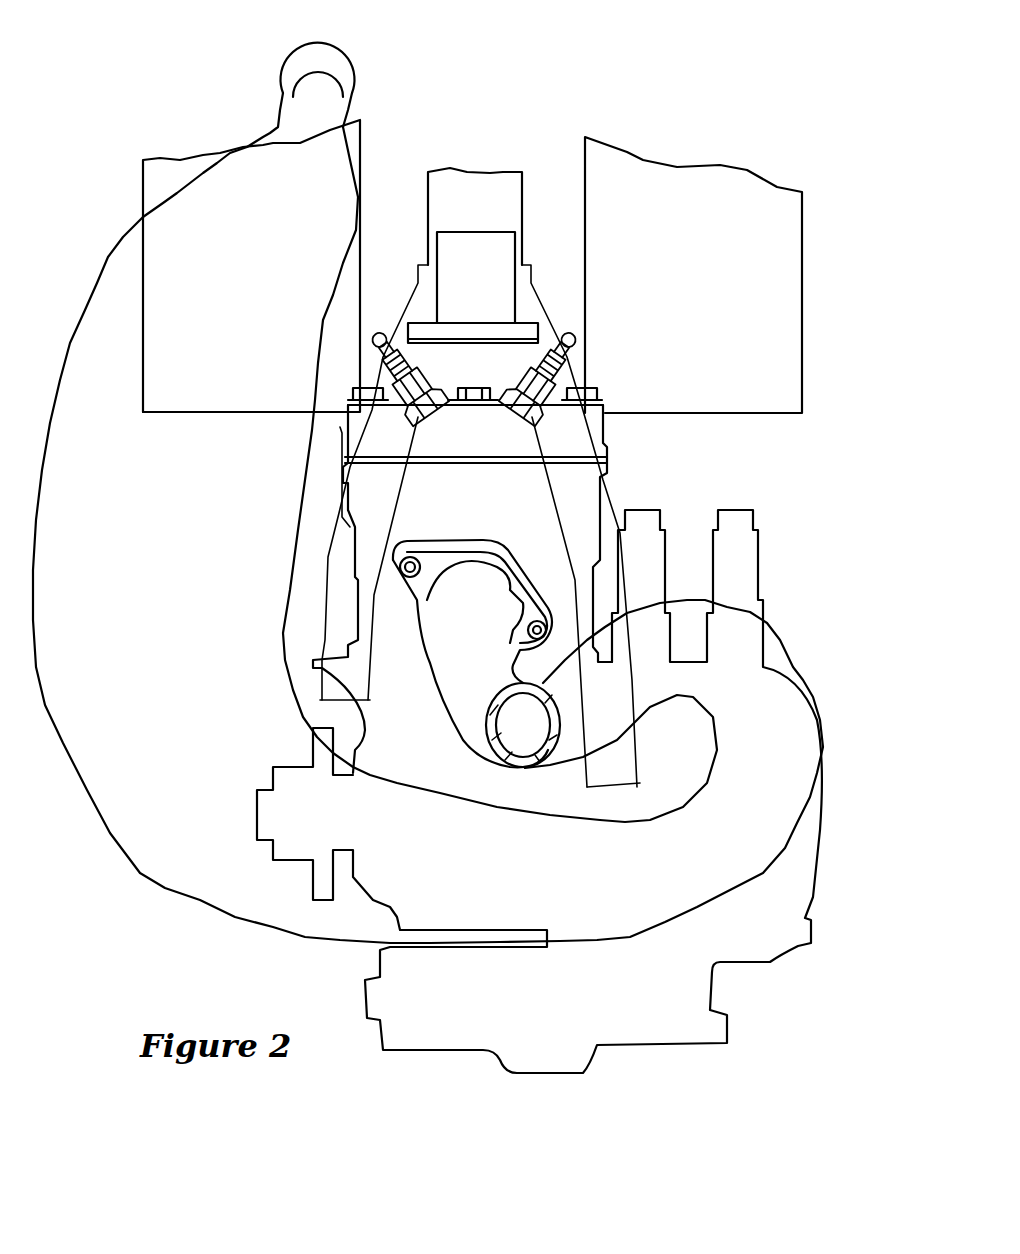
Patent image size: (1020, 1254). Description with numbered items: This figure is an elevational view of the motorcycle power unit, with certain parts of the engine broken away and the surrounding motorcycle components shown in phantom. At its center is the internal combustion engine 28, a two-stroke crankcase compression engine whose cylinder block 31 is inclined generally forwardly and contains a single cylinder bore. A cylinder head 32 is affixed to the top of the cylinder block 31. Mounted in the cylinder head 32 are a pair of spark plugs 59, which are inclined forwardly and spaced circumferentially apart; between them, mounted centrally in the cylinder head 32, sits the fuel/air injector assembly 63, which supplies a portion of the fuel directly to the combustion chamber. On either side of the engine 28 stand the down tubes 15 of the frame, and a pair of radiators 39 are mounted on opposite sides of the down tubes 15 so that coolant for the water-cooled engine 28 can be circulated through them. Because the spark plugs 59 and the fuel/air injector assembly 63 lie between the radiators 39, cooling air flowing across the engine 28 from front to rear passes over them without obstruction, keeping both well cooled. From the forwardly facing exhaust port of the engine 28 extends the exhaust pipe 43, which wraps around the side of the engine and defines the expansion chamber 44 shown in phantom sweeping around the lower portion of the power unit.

The down tubes 15 is at (347, 472).
The internal combustion engine 28 is at (305, 633).
The cylinder block 31 is at (347, 498).
The cylinder head 32 is at (347, 437).
The radiators 39 is at (143, 248).
The exhaust pipe 43 is at (448, 690).
The expansion chamber 44 is at (57, 343).
The spark plugs 59 is at (380, 383).
The fuel/air injector assembly 63 is at (517, 295).